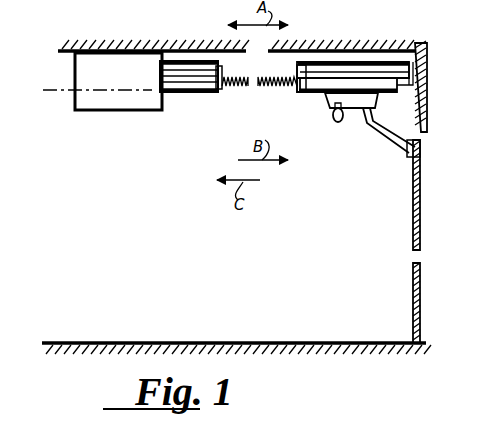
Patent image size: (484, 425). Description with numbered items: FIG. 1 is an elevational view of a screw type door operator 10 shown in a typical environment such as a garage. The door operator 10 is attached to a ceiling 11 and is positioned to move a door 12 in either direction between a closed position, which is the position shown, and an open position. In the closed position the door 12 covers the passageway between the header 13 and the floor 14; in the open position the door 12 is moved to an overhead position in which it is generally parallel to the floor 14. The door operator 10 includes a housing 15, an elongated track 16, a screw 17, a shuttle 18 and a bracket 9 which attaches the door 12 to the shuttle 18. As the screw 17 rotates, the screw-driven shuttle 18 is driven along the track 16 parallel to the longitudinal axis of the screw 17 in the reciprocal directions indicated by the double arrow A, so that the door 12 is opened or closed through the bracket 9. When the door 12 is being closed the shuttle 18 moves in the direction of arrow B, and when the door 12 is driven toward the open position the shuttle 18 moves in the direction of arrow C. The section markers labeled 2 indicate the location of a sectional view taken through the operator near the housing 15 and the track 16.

The section line 2 is at (65, 93).
The bracket 9 is at (365, 133).
The screw type door operator 10 is at (137, 177).
The ceiling 11 is at (194, 48).
The door 12 is at (420, 260).
The header 13 is at (428, 106).
The floor 14 is at (345, 343).
The housing 15 is at (113, 113).
The elongated track 16 is at (212, 95).
The screw 17 is at (250, 89).
The shuttle 18 is at (326, 99).